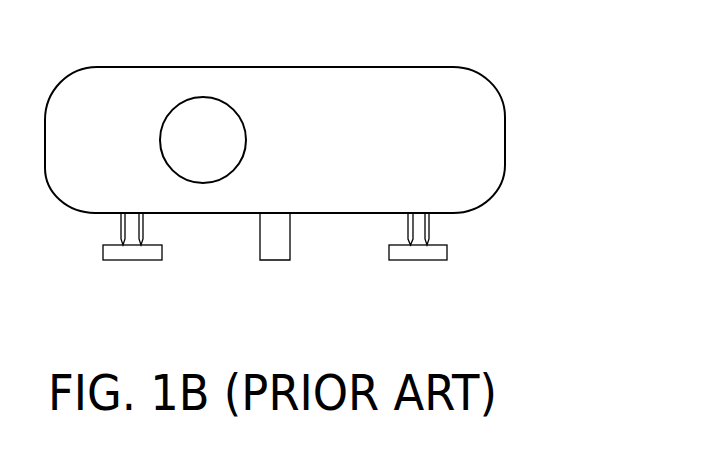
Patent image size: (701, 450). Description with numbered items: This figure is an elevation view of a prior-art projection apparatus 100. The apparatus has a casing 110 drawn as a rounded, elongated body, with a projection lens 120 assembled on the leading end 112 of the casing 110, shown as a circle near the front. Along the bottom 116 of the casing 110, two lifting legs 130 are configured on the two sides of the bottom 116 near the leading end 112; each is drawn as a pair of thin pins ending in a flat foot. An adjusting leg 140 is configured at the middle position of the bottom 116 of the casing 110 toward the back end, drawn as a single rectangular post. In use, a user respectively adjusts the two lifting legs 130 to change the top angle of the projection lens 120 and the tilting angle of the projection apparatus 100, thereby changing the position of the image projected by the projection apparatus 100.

The projection apparatus 100 is at (306, 185).
The casing 110 is at (306, 146).
The leading end 112 is at (348, 103).
The bottom 116 is at (323, 213).
The projection lens 120 is at (205, 97).
The lifting legs 130 is at (110, 260).
The adjusting leg 140 is at (268, 260).